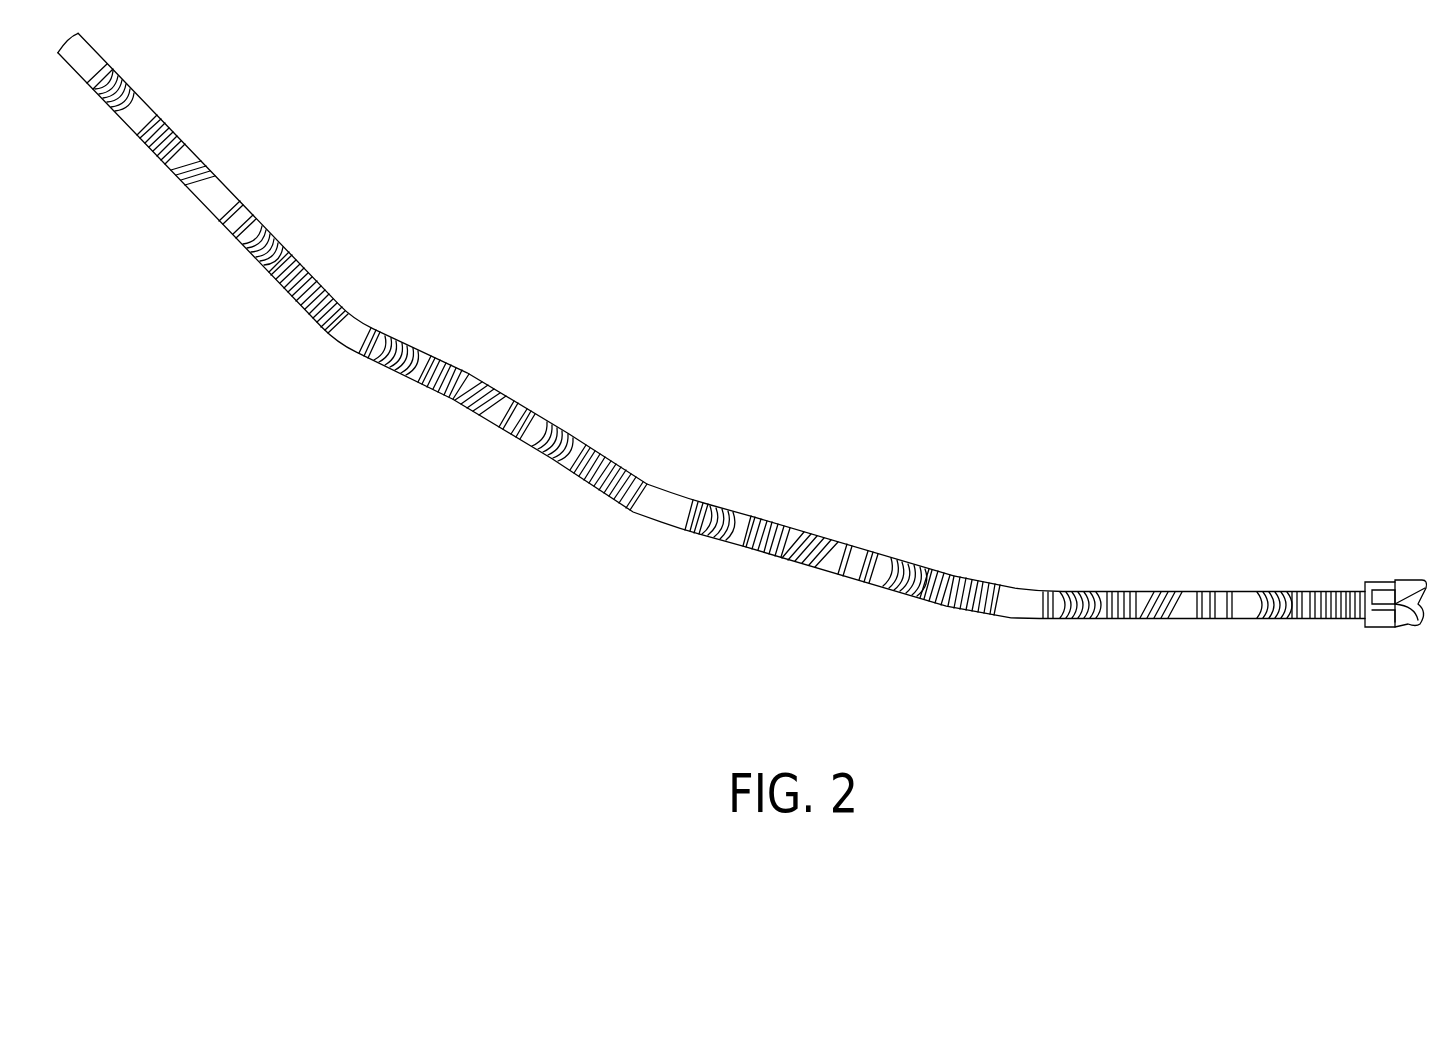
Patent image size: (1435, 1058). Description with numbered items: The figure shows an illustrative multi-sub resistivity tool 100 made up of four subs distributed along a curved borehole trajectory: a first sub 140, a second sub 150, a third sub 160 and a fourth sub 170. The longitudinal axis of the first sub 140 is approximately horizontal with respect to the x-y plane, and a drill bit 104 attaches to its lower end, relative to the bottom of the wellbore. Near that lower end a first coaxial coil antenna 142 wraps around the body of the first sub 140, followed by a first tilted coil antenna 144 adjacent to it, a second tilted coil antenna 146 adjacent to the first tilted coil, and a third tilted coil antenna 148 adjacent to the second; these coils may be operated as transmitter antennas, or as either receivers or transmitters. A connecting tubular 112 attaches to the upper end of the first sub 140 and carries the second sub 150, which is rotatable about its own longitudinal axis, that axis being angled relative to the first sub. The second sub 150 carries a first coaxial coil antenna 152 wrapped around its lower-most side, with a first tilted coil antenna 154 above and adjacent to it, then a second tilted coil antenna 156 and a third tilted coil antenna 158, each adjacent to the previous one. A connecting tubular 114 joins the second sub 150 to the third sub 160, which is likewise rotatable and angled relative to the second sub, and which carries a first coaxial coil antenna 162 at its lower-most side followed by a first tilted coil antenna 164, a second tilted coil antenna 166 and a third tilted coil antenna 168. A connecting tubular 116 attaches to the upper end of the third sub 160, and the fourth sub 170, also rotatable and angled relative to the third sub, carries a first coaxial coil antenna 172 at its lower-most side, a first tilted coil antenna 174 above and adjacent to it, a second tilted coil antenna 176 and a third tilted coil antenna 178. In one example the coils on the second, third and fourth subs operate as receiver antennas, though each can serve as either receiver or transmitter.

The multi-sub resistivity tool 100 is at (855, 217).
The drill bit 104 is at (1388, 627).
The connecting tubular 112 is at (1021, 591).
The connecting tubular 114 is at (667, 495).
The connecting tubular 116 is at (355, 318).
The first sub 140 is at (1218, 589).
The first coaxial coil antenna 142 is at (1327, 623).
The first tilted coil antenna 144 is at (1243, 623).
The second tilted coil antenna 146 is at (1157, 623).
The third tilted coil antenna 148 is at (1097, 623).
The second sub 150 is at (817, 527).
The first coaxial coil antenna 152 is at (963, 608).
The first tilted coil antenna 154 is at (887, 555).
The second tilted coil antenna 156 is at (797, 563).
The third tilted coil antenna 158 is at (733, 537).
The third sub 160 is at (496, 390).
The first coaxial coil antenna 162 is at (607, 493).
The first tilted coil antenna 164 is at (550, 430).
The second tilted coil antenna 166 is at (463, 410).
The third tilted coil antenna 168 is at (407, 367).
The fourth sub 170 is at (213, 164).
The first coaxial coil antenna 172 is at (300, 300).
The first tilted coil antenna 174 is at (257, 224).
The second tilted coil antenna 176 is at (176, 177).
The third tilted coil antenna 178 is at (130, 124).